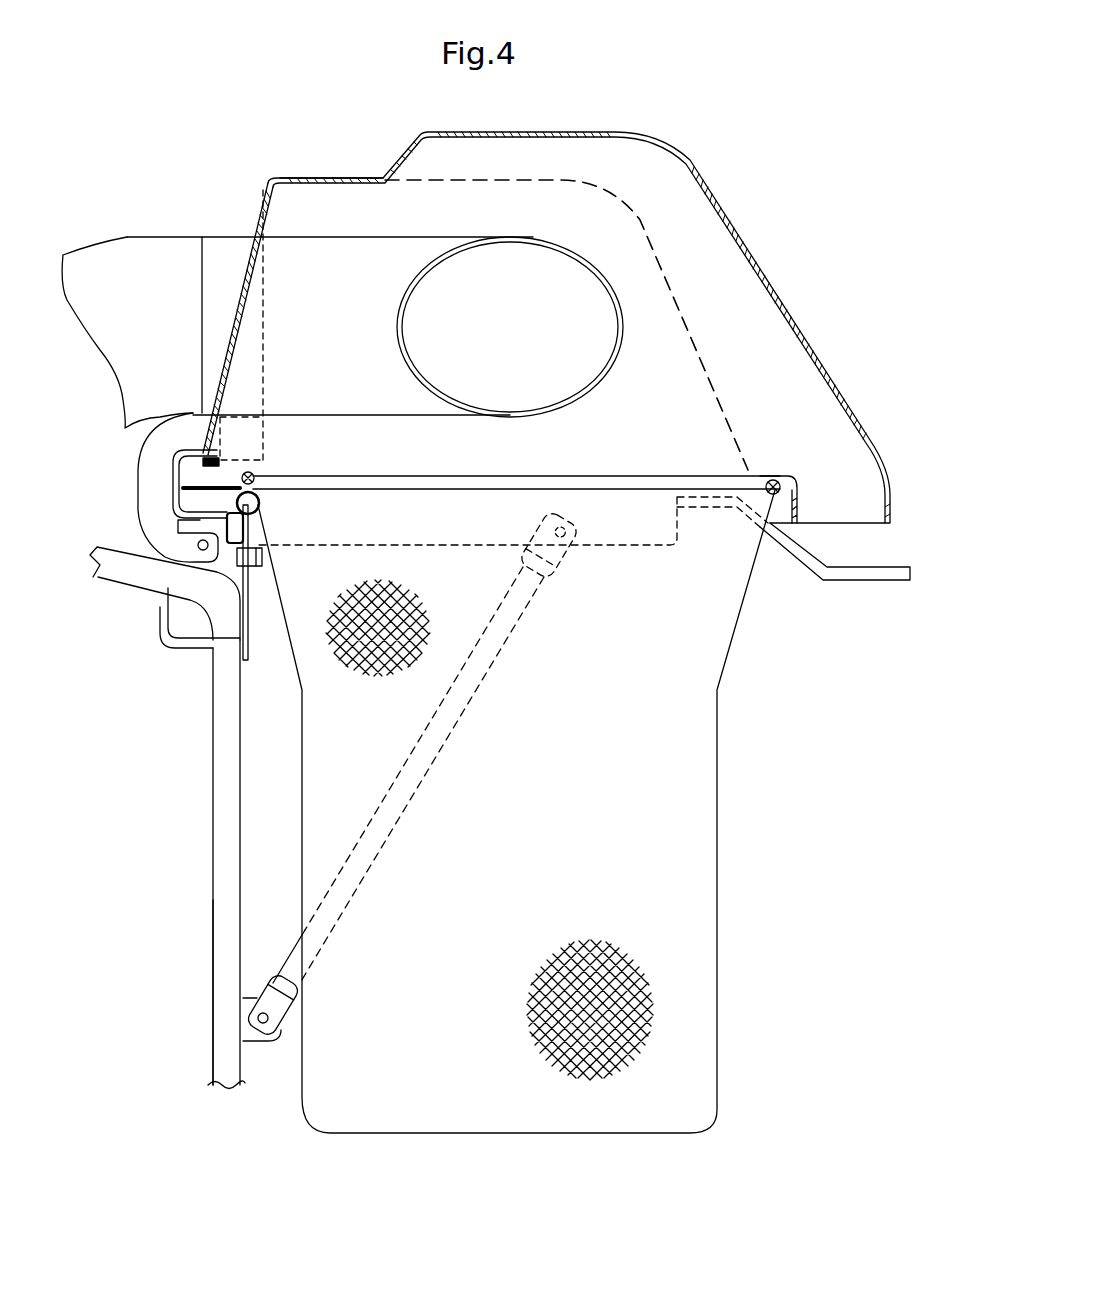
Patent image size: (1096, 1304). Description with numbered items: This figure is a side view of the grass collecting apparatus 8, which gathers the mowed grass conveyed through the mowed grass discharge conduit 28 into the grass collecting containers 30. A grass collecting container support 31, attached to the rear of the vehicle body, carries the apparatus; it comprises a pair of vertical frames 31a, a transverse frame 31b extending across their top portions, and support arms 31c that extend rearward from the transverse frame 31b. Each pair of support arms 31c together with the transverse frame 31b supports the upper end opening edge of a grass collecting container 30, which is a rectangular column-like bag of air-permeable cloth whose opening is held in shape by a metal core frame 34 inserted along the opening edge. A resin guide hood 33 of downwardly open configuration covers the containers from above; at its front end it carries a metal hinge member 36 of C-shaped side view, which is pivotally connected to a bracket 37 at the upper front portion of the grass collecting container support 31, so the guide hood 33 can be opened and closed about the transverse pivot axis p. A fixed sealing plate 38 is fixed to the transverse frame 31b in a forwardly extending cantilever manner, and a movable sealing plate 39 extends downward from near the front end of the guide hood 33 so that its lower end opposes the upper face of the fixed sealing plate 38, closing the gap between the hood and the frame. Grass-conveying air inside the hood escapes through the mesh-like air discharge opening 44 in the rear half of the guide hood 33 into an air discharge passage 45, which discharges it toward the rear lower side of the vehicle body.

The grass collecting apparatus 8 is at (741, 139).
The mowed grass discharge conduit 28 is at (125, 246).
The grass collecting container 30 is at (717, 838).
The grass collecting container support 31 is at (203, 795).
The vertical frame 31a is at (217, 907).
The transverse frame 31b is at (256, 520).
The support arm 31c is at (610, 548).
The guide hood 33 is at (322, 176).
The core frame 34 is at (470, 477).
The hinge member 36 is at (171, 426).
The bracket 37 is at (220, 572).
The fixed sealing plate 38 is at (198, 491).
The movable sealing plate 39 is at (193, 480).
The air discharge opening 44 is at (690, 345).
The air discharge passage 45 is at (759, 297).
The pivot axis p is at (197, 544).